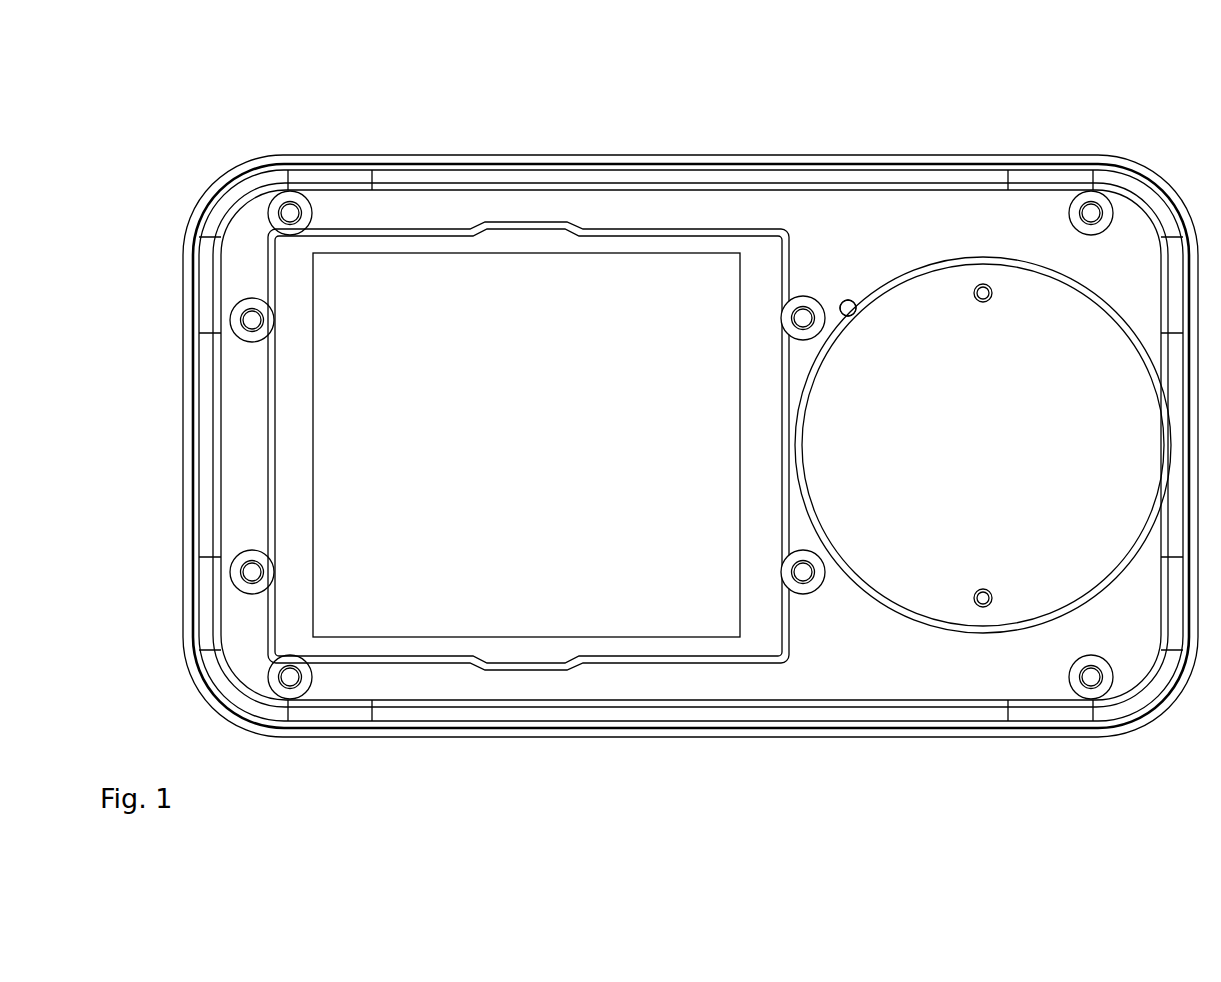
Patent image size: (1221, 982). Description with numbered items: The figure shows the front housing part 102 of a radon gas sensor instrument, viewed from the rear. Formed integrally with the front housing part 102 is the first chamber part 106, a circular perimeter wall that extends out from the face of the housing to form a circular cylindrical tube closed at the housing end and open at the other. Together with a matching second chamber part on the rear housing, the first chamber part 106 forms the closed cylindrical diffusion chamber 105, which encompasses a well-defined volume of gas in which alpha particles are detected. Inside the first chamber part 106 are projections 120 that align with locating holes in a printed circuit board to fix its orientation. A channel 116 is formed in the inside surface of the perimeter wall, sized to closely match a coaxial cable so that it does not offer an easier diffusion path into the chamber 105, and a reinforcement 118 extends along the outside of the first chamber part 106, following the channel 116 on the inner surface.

The front housing part 102 is at (713, 168).
The diffusion chamber 105 is at (983, 445).
The first chamber part 106 is at (983, 257).
The channel 116 is at (852, 316).
The reinforcement 118 is at (846, 303).
The projections 120 is at (992, 595).